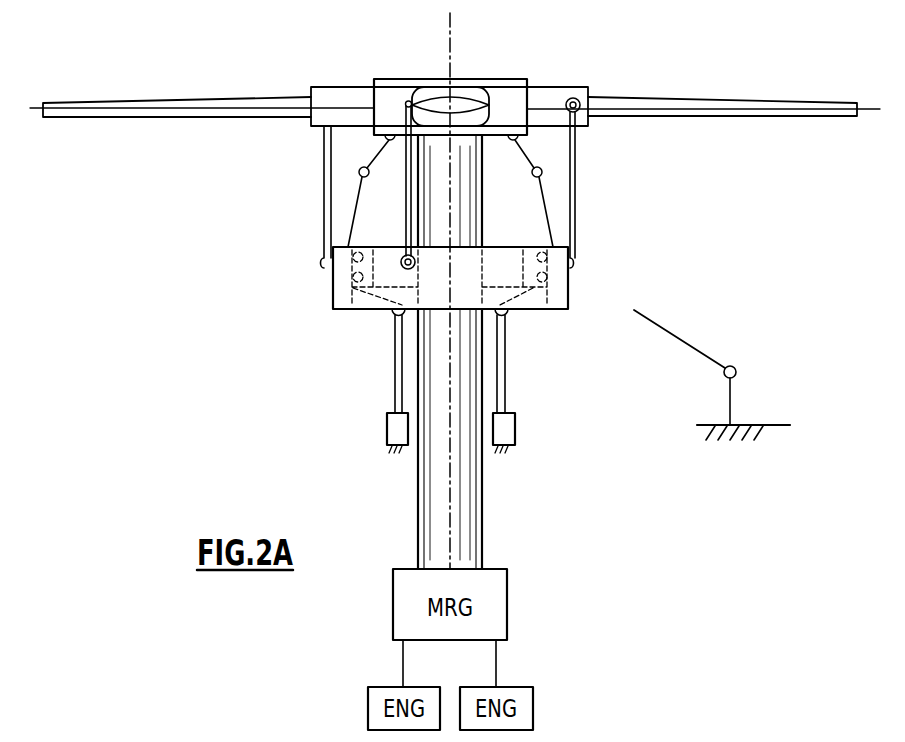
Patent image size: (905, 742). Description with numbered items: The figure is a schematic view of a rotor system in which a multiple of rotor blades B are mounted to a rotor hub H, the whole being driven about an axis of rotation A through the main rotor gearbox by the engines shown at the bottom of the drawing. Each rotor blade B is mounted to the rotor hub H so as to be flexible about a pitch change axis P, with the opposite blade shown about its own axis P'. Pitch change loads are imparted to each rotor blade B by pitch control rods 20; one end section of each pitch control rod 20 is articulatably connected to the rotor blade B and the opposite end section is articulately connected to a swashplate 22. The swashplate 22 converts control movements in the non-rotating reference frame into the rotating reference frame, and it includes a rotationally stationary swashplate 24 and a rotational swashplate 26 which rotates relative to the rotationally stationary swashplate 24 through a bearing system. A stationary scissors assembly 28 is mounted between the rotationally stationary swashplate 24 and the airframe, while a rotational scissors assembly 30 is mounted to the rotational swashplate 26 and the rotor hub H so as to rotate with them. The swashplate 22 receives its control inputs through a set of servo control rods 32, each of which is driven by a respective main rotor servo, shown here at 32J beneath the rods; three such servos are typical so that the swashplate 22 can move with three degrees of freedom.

The axis of rotation A is at (452, 42).
The rotor hub H is at (507, 85).
The rotor blade B is at (203, 97).
The pitch change axis P is at (202, 136).
The blade pitch axis P' is at (703, 139).
The pitch control rod 20 is at (323, 178).
The swashplate 22 is at (618, 249).
The rotationally stationary swashplate 24 is at (505, 292).
The rotational swashplate 26 is at (332, 285).
The stationary scissors assembly 28 is at (708, 330).
The rotational scissors assembly 30 is at (541, 191).
The servo control rod 32 is at (393, 361).
The servo actuator 32J is at (395, 424).